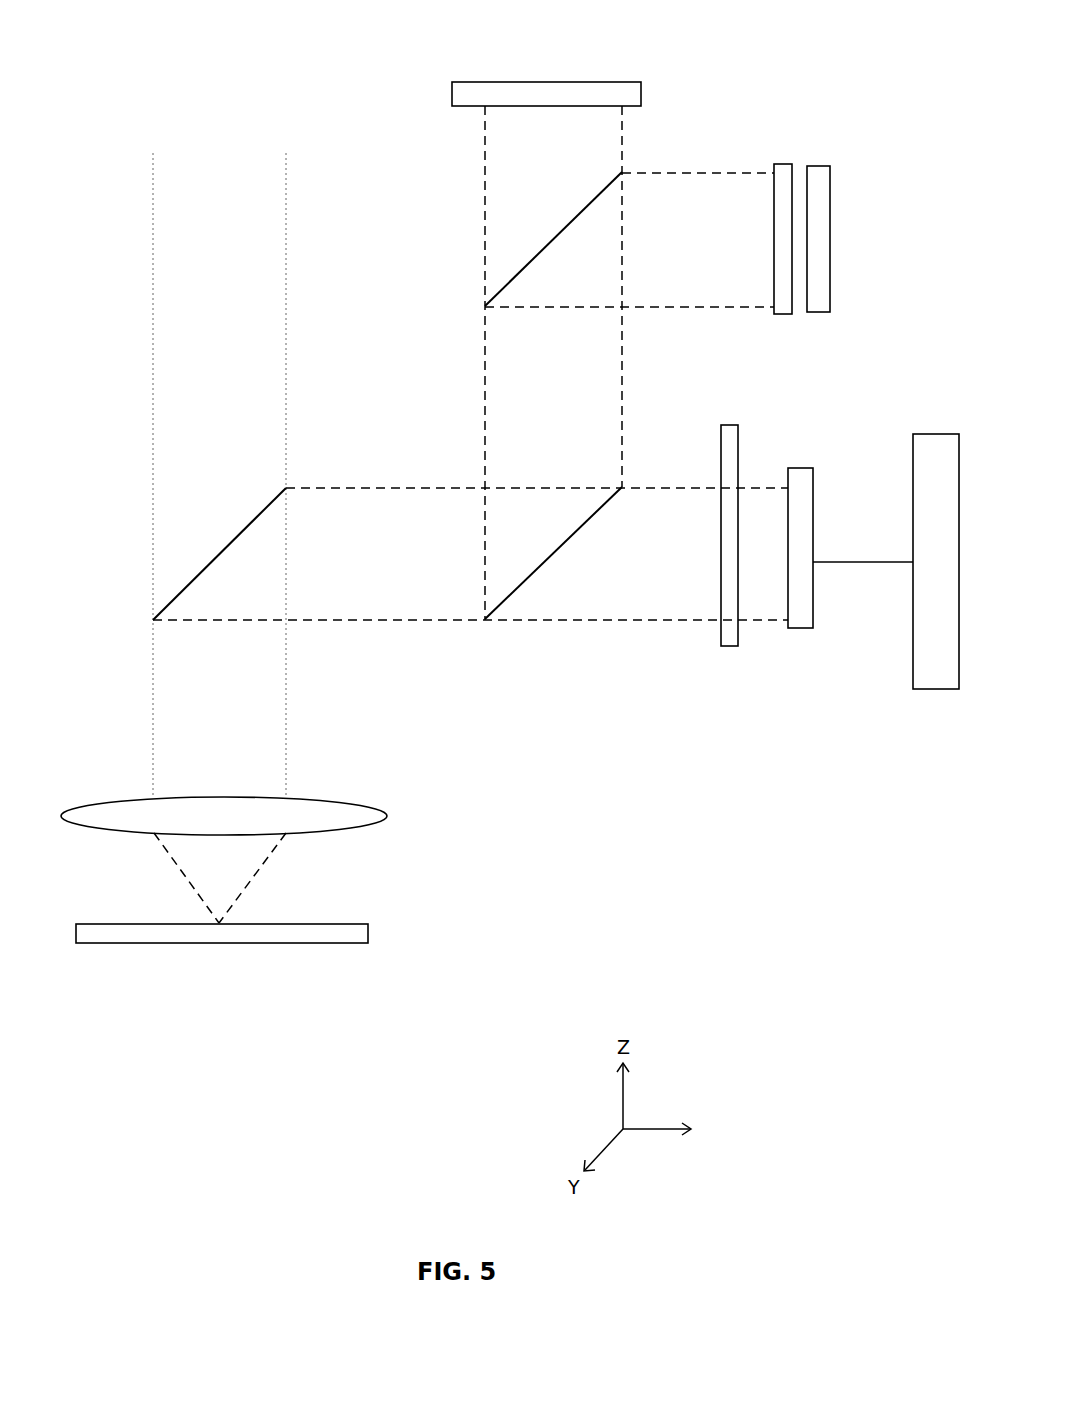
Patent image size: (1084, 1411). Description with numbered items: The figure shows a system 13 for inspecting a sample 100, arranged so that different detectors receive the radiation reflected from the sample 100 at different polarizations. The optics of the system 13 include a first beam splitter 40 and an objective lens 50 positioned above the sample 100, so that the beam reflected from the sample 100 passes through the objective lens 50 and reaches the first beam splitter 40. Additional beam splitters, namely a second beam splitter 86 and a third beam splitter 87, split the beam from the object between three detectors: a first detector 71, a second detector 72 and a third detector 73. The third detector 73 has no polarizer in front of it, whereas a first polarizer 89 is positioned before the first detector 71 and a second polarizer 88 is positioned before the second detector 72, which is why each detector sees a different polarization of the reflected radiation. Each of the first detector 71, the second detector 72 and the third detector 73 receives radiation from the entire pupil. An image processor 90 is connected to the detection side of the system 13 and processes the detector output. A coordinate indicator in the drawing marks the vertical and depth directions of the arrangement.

The system 13 is at (455, 625).
The first beam splitter 40 is at (222, 548).
The objective lens 50 is at (78, 805).
The first detector 71 is at (800, 632).
The second detector 72 is at (817, 163).
The third detector 73 is at (452, 95).
The second beam splitter 86 is at (605, 500).
The third beam splitter 87 is at (555, 245).
The second polarizer 88 is at (787, 316).
The first polarizer 89 is at (722, 648).
The image processor 90 is at (886, 561).
The sample 100 is at (370, 943).